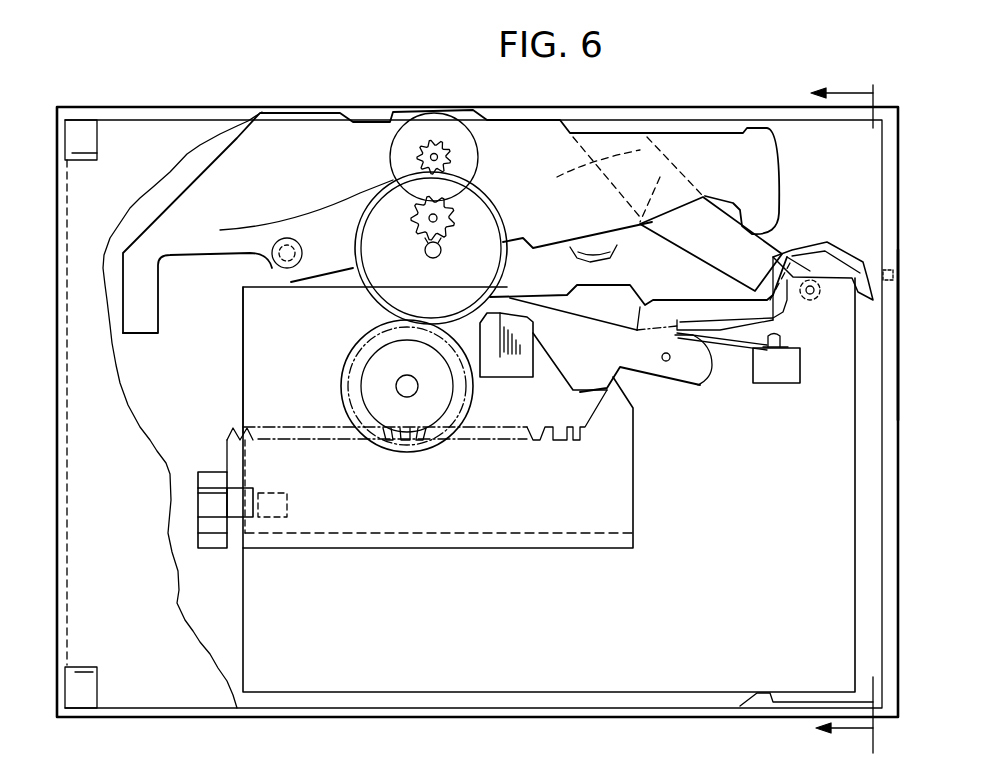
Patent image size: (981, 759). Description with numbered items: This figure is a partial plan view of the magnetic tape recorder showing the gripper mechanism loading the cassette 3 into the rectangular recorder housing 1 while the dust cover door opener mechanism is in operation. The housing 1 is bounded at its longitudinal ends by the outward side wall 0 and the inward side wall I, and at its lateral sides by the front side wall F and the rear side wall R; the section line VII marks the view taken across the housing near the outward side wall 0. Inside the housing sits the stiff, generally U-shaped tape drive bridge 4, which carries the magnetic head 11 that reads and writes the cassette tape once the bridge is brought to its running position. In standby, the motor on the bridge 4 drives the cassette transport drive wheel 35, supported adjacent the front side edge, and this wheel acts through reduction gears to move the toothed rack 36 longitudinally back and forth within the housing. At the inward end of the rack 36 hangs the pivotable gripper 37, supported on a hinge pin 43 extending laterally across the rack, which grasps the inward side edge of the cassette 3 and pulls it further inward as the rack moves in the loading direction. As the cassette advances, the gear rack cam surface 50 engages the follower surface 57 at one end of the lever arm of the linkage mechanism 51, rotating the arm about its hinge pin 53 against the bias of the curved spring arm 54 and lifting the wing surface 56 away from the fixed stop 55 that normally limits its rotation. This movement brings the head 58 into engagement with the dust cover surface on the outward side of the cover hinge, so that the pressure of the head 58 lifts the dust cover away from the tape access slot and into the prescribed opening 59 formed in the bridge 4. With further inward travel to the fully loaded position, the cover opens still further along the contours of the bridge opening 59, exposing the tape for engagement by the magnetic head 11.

The recorder housing 1 is at (296, 93).
The magnetic tape cassette 3 is at (806, 635).
The tape drive bridge 4 is at (286, 174).
The magnetic head 11 is at (622, 258).
The cassette transport drive wheel 35 is at (480, 152).
The toothed rack 36 is at (440, 518).
The gripper 37 is at (199, 477).
The hinge pin 43 is at (247, 478).
The gear rack cam surface 50 is at (640, 453).
The linkage mechanism 51 is at (702, 392).
The hinge pin 53 is at (661, 357).
The spring arm 54 is at (728, 336).
The fixed stop 55 is at (513, 368).
The wing surface 56 is at (522, 300).
The follower surface 57 is at (640, 397).
The head 58 is at (838, 268).
The bridge opening 59 is at (661, 218).
The outward side wall 0 is at (903, 348).
The front side wall F is at (606, 101).
The rear side wall R is at (680, 725).
The inward side wall I is at (52, 352).
The section VII is at (824, 83).